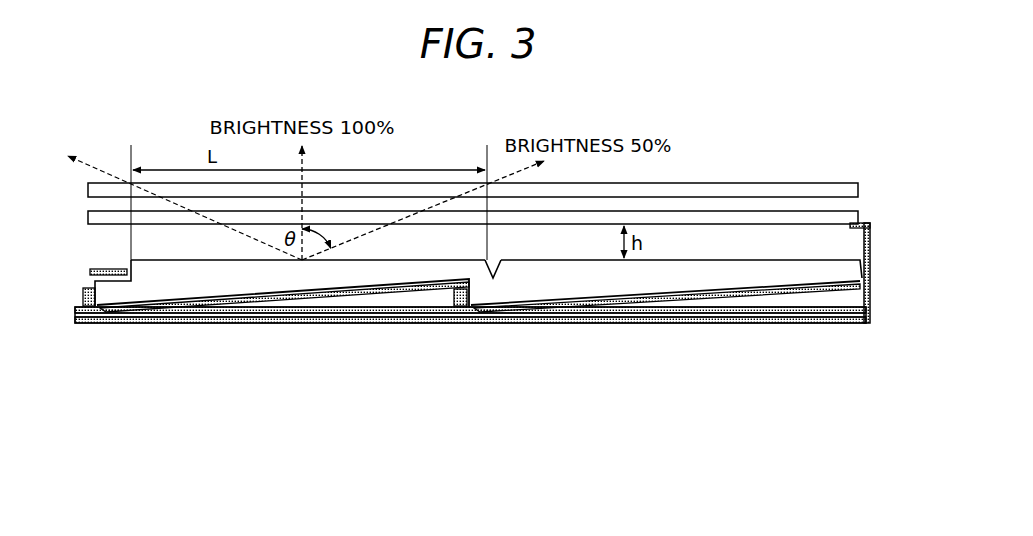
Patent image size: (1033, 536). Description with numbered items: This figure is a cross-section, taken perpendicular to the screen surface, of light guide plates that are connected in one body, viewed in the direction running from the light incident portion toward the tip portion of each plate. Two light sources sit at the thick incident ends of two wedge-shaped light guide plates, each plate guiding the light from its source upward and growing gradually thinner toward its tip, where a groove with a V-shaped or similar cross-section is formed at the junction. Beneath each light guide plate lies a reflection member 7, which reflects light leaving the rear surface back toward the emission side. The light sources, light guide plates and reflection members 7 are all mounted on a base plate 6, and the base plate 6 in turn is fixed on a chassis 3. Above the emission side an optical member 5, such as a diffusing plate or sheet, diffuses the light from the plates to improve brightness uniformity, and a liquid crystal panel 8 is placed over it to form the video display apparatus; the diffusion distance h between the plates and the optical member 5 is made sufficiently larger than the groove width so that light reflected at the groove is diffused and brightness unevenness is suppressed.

The chassis 3 is at (788, 324).
The optical member 5 is at (765, 219).
The base plate 6 is at (348, 311).
The reflection member 7 is at (108, 268).
The liquid crystal panel 8 is at (733, 191).